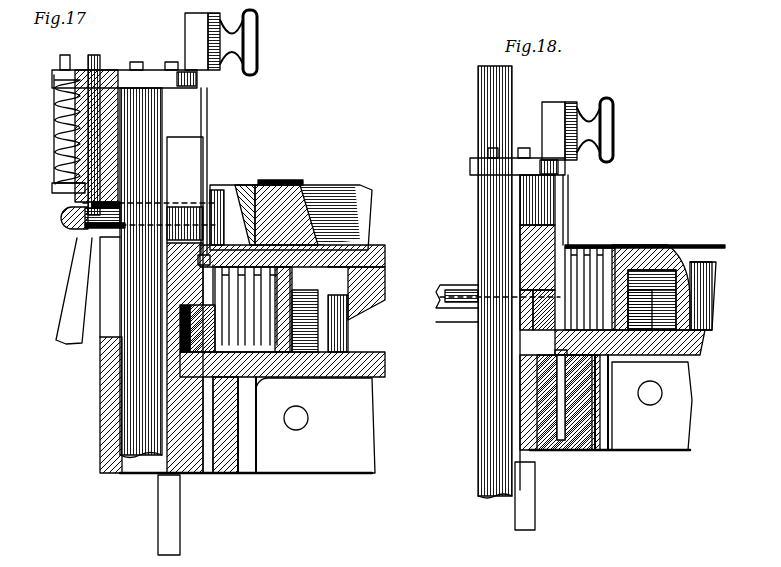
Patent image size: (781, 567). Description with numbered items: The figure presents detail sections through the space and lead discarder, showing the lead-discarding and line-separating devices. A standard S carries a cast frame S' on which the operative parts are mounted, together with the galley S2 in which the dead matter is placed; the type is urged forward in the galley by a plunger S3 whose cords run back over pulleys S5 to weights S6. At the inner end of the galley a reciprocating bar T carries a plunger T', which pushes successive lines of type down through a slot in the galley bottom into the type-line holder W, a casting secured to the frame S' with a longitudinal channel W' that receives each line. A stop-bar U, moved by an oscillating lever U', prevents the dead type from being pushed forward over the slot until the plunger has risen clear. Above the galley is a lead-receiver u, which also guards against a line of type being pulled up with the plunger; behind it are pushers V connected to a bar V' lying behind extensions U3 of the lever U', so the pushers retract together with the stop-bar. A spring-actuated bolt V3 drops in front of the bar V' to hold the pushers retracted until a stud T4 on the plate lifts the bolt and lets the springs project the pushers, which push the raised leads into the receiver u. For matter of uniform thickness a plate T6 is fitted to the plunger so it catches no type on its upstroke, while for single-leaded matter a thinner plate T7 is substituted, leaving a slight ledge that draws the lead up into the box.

In FIG. 17, the spring-actuated bolt V3 is at (95, 70).
In FIG. 17, the reciprocating bar T is at (141, 271).
In FIG. 18, the reciprocating bar T is at (516, 281).
In FIG. 17, the plunger T' is at (218, 176).
In FIG. 18, the plunger T' is at (587, 210).
In FIG. 17, the stud T4 is at (128, 210).
In FIG. 18, the stud T4 is at (462, 292).
In FIG. 18, the plate T6 is at (572, 222).
In FIG. 17, the thinner plate T7 is at (221, 61).
In FIG. 17, the pushers V is at (185, 212).
In FIG. 17, the bar V' is at (73, 230).
In FIG. 17, the lead-receiver u is at (291, 206).
In FIG. 17, the stop-bar U is at (252, 309).
In FIG. 18, the stop-bar U is at (527, 289).
In FIG. 17, the oscillating lever U' is at (81, 287).
In FIG. 18, the oscillating lever U' is at (457, 333).
In FIG. 17, the extensions of lever U3 is at (84, 258).
In FIG. 17, the standard S is at (267, 358).
In FIG. 18, the standard S is at (615, 277).
In FIG. 17, the cast frame S' is at (181, 328).
In FIG. 18, the cast frame S' is at (530, 310).
In FIG. 17, the galley S2 is at (104, 388).
In FIG. 18, the galley S2 is at (700, 268).
In FIG. 17, the plunger S3 is at (320, 297).
In FIG. 18, the plunger S3 is at (678, 290).
In FIG. 17, the pulleys S5 is at (203, 357).
In FIG. 18, the pulleys S5 is at (630, 342).
In FIG. 17, the weights S6 is at (180, 310).
In FIG. 17, the type-line holder W is at (257, 425).
In FIG. 18, the type-line holder W is at (615, 402).
In FIG. 17, the longitudinal channel W' is at (273, 412).
In FIG. 18, the longitudinal channel W' is at (637, 388).